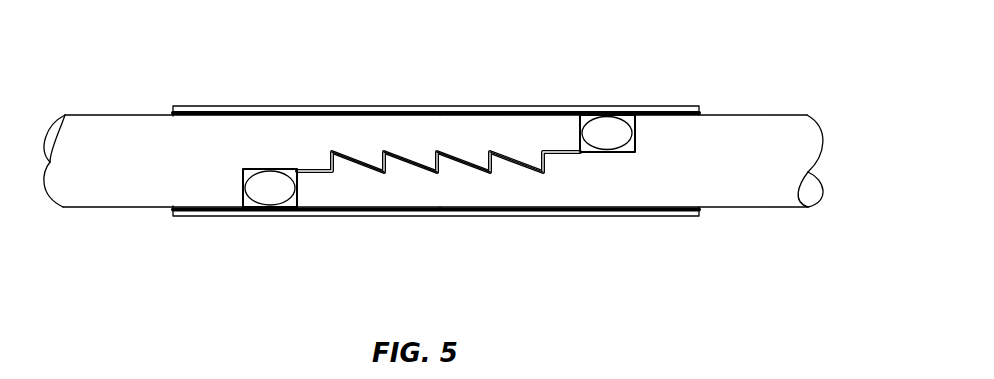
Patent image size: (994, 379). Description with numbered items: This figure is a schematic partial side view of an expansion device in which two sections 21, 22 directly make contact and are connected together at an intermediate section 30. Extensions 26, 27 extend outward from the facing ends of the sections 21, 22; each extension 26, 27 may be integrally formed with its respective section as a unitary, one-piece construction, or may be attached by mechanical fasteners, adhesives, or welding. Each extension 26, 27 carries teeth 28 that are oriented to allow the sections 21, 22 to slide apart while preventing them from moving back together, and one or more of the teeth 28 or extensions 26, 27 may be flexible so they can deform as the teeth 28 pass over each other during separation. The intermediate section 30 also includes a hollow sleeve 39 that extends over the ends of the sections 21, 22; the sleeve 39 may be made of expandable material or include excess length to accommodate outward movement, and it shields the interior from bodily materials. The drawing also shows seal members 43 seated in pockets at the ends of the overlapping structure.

The section 21 is at (139, 170).
The section 22 is at (779, 172).
The extension 26 is at (358, 135).
The extension 27 is at (512, 187).
The teeth 28 is at (463, 168).
The intermediate section 30 is at (433, 139).
The sleeve 39 is at (700, 213).
The O-ring seal 43 is at (607, 133).